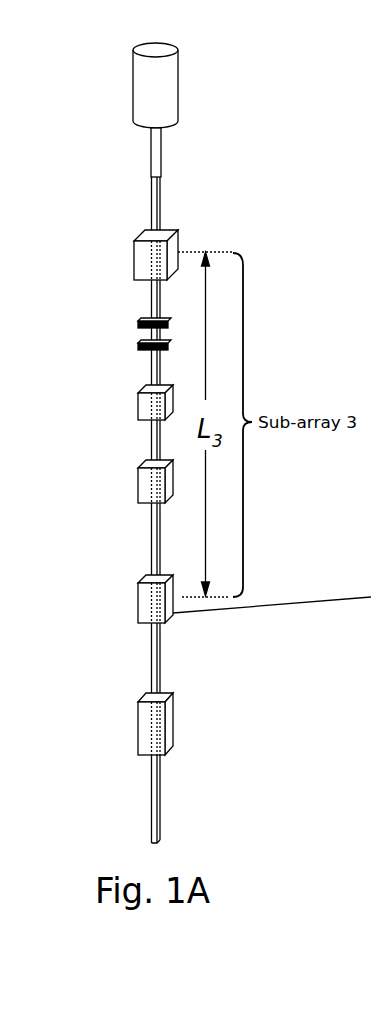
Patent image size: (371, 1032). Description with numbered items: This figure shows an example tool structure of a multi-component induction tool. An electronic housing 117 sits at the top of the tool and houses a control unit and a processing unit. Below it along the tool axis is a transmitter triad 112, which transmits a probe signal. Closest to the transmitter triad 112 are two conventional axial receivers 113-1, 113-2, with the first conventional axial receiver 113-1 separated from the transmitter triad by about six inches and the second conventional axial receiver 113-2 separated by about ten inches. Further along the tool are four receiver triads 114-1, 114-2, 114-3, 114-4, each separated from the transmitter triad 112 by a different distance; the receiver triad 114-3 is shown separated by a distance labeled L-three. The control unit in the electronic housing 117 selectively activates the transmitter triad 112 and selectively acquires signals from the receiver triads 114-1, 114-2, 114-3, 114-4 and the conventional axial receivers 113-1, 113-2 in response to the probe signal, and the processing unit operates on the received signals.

The electronic housing 117 is at (178, 77).
The transmitter triad 112 is at (134, 263).
The conventional axial receiver 113-1 is at (170, 321).
The conventional axial receiver 113-2 is at (170, 344).
The receiver triad 114-1 is at (138, 408).
The receiver triad 114-2 is at (138, 487).
The receiver triad 114-3 is at (138, 605).
The receiver triad 114-4 is at (138, 730).